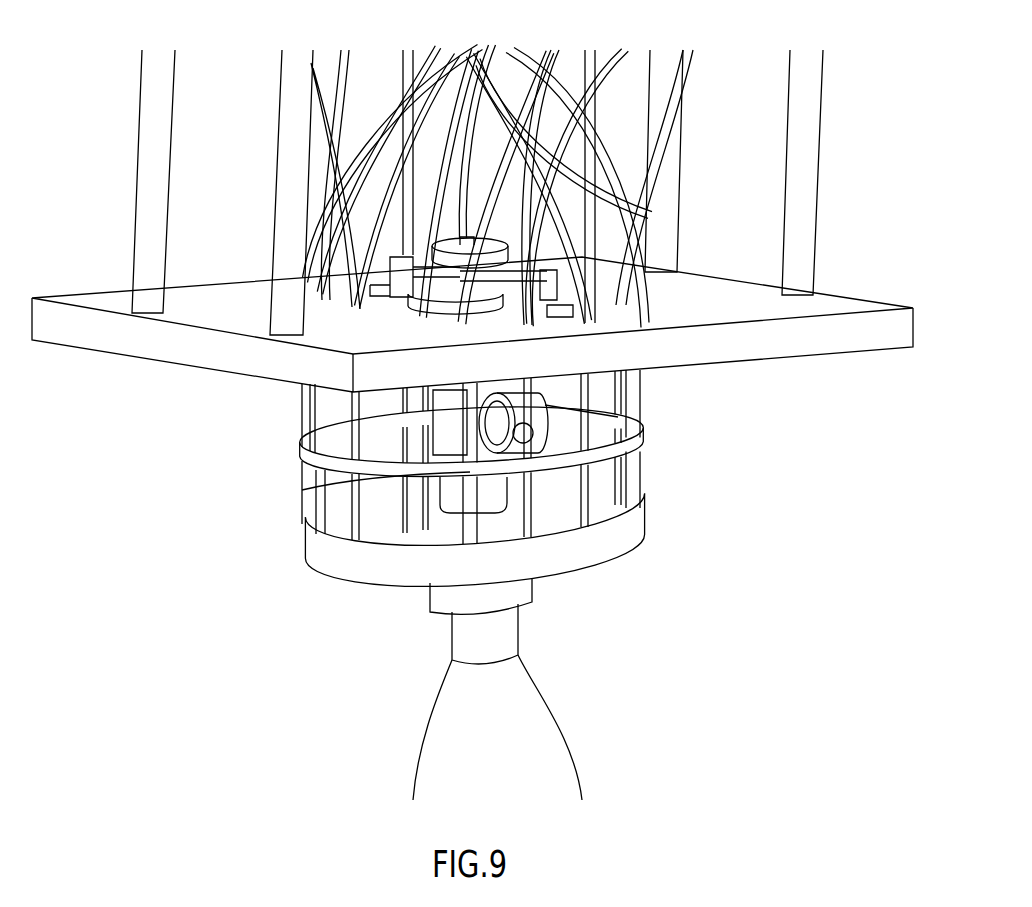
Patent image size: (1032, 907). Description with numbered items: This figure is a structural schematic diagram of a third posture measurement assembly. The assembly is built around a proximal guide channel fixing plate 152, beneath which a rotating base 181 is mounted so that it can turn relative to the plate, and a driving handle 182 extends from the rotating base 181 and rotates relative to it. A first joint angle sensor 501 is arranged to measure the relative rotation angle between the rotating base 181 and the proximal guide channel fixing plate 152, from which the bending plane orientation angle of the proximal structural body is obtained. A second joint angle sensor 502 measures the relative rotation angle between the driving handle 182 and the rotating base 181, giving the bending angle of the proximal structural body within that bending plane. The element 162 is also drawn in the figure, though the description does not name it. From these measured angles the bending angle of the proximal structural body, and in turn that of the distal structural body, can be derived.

The proximal guide channel fixing plate 152 is at (228, 348).
The first joint angle sensor 501 is at (500, 257).
The second joint angle sensor 502 is at (640, 458).
The rotating base 181 is at (447, 395).
The cylindrical housing 162 is at (390, 562).
The driving handle 182 is at (508, 698).